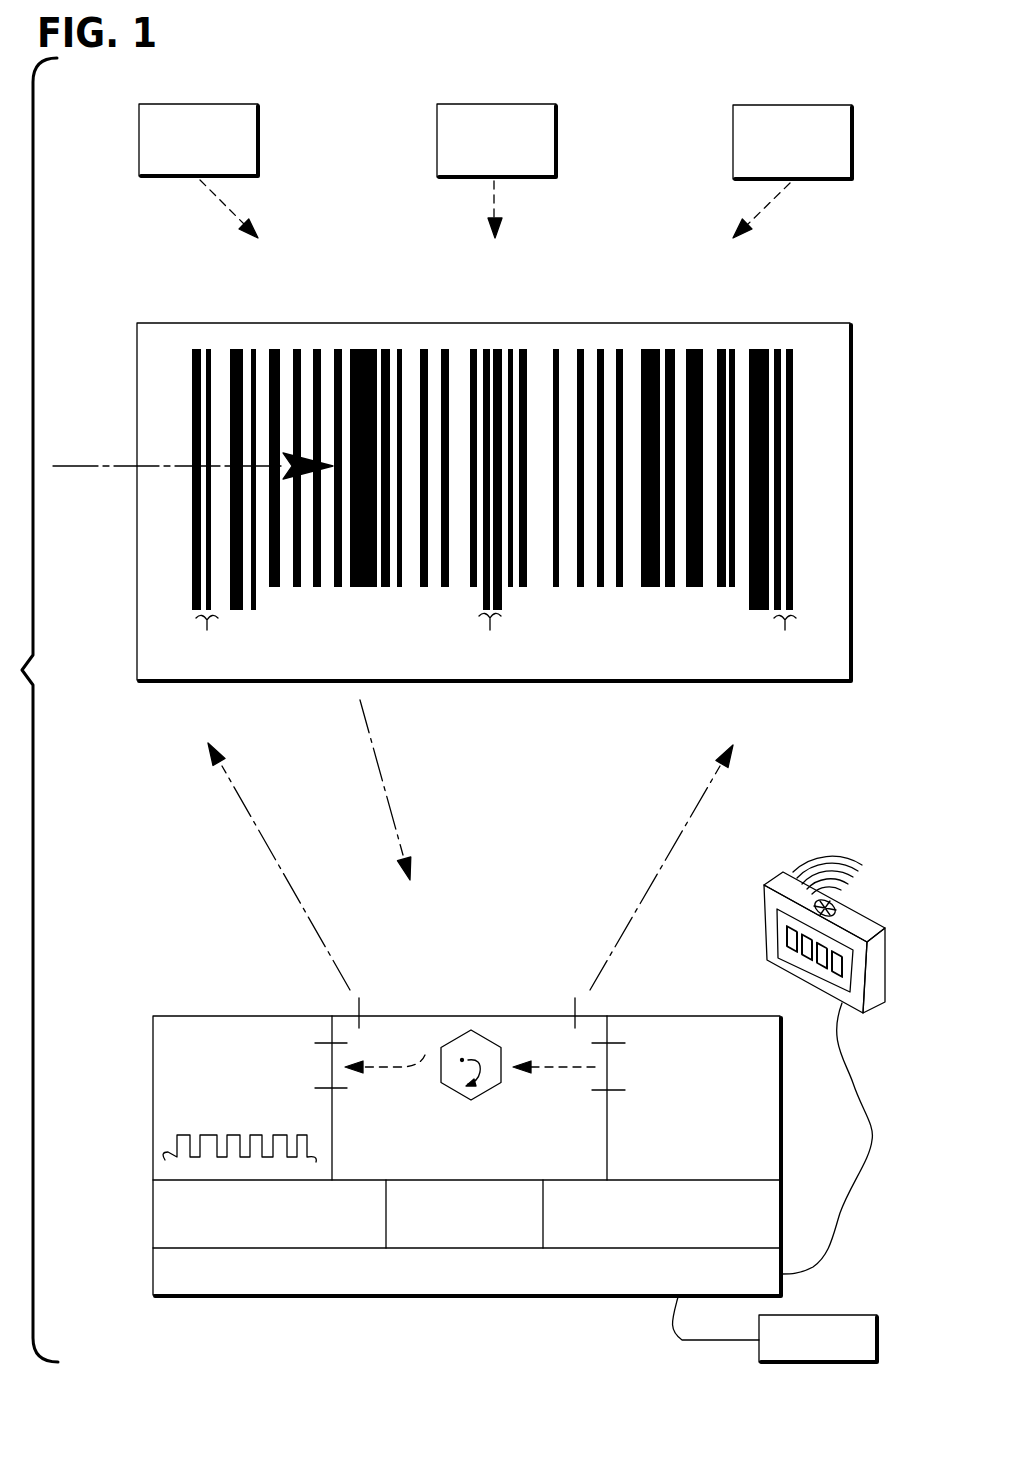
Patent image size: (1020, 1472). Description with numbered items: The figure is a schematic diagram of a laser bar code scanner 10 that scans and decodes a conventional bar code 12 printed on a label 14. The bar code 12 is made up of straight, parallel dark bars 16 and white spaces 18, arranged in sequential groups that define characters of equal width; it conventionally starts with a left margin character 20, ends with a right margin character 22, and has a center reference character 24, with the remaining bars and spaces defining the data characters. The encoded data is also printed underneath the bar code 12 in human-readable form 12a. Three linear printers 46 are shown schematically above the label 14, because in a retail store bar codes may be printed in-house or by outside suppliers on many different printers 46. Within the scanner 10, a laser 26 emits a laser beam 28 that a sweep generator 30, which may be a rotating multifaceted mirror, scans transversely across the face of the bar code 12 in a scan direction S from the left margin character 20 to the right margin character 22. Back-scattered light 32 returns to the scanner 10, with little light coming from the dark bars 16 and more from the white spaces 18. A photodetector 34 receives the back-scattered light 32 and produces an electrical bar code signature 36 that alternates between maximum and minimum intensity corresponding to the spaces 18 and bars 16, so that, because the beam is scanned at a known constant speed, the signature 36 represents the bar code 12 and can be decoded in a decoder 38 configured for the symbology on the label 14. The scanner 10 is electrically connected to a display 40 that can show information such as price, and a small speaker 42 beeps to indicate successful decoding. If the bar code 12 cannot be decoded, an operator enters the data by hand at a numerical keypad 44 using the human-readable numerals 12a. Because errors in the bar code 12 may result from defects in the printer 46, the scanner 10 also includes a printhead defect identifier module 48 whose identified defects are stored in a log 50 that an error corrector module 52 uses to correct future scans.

The laser bar code scanner 10 is at (657, 952).
The bar code 12 is at (526, 434).
The human-readable form 12a is at (708, 650).
The label 14 is at (833, 323).
The dark bars 16 is at (236, 349).
The white spaces 18 is at (259, 349).
The left margin character 20 is at (207, 630).
The right margin character 22 is at (785, 630).
The center reference character 24 is at (490, 630).
The laser 26 is at (700, 1145).
The laser beam 28 is at (289, 880).
The sweep generator 30 is at (385, 1137).
The back-scattered light 32 is at (388, 800).
The photodetector 34 is at (199, 1050).
The bar code signature 36 is at (165, 1130).
The decoder 38 is at (617, 1284).
The display 40 is at (783, 970).
The speaker 42 is at (838, 912).
The numerical keypad 44 is at (825, 1315).
The linear printer 46 is at (150, 104).
The printhead defect identifier module 48 is at (356, 1226).
The log 50 is at (515, 1237).
The error corrector module 52 is at (597, 1217).
The scan direction S is at (100, 468).